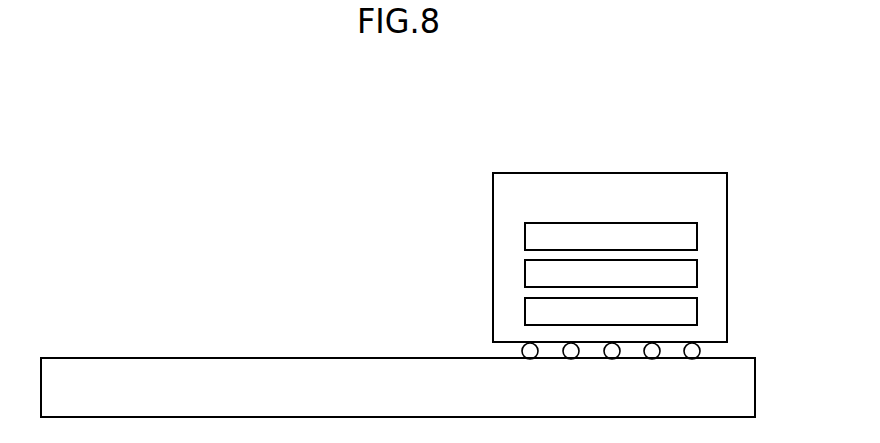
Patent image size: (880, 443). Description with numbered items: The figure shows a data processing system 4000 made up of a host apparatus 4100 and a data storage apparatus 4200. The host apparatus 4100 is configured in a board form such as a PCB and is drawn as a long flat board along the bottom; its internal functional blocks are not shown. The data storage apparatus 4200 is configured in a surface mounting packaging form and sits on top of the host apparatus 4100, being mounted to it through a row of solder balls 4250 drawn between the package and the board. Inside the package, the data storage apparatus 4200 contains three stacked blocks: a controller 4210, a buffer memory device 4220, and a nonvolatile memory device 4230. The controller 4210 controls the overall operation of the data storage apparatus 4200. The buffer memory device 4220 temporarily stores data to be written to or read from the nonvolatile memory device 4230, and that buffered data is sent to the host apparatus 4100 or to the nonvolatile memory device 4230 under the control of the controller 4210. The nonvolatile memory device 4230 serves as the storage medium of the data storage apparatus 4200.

The data processing system 4000 is at (103, 113).
The host apparatus 4100 is at (398, 387).
The data storage apparatus 4200 is at (610, 257).
The controller 4210 is at (611, 237).
The buffer memory device 4220 is at (611, 275).
The nonvolatile memory device 4230 is at (611, 313).
The solder ball 4250 is at (712, 349).